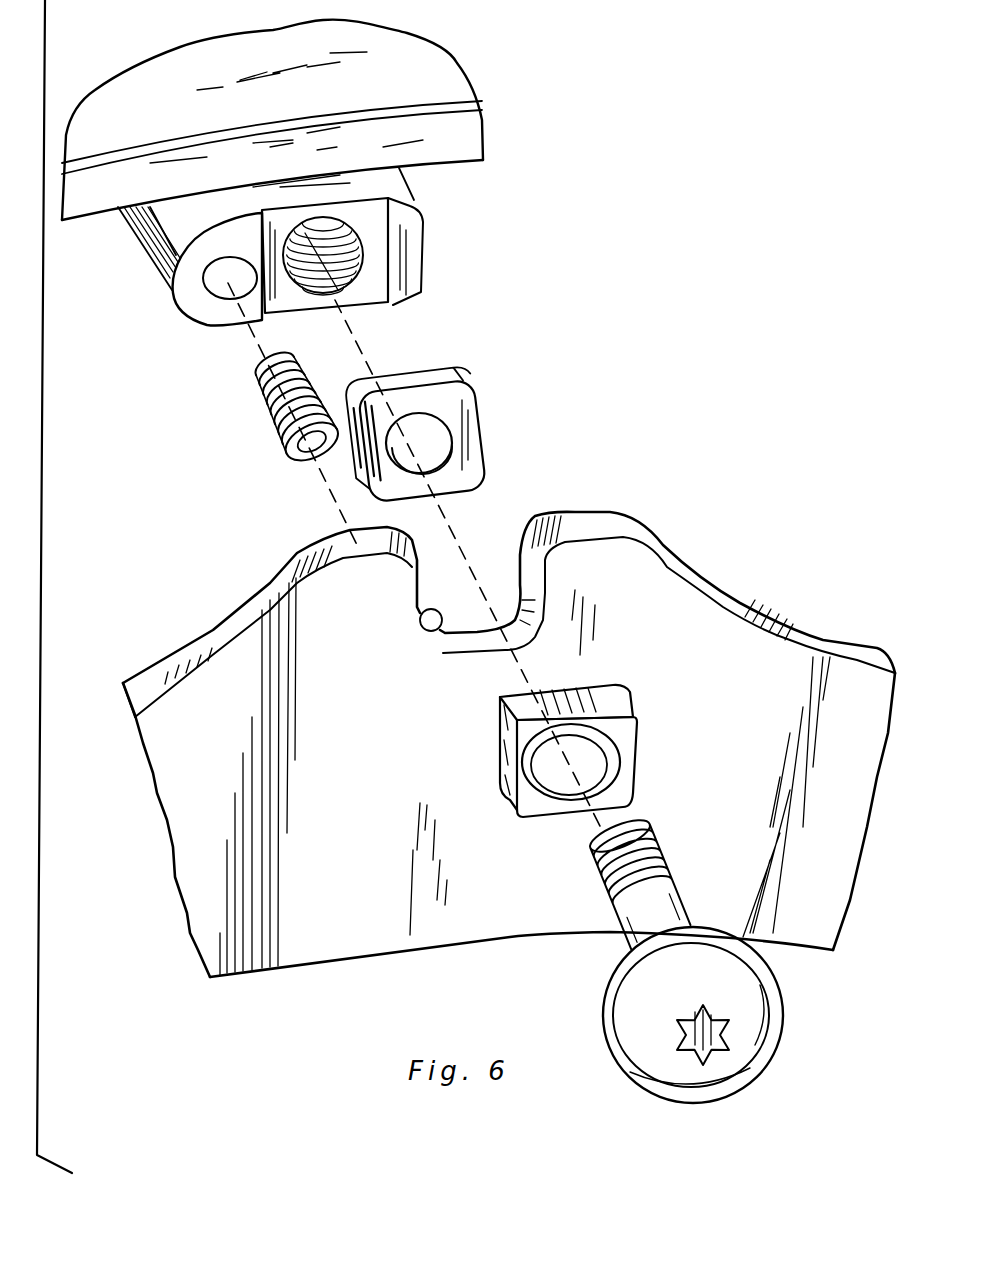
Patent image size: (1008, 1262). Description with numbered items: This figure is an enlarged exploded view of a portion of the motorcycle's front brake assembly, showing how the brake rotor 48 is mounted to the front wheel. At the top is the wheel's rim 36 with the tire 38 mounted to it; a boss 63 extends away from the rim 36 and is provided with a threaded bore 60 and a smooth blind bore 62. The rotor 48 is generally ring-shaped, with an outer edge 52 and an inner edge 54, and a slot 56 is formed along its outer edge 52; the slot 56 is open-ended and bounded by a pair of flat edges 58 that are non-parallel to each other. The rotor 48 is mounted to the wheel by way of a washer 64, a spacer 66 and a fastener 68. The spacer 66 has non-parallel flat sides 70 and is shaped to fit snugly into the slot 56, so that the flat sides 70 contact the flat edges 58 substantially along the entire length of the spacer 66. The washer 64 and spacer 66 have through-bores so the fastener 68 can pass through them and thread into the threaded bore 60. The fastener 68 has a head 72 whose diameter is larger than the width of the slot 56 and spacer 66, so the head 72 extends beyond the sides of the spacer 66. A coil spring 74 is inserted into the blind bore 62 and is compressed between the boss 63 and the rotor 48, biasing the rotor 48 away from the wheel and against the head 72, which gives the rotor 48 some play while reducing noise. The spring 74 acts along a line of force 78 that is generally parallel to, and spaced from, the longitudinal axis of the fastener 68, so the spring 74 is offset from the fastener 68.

The rim 36 is at (440, 129).
The tire 38 is at (447, 67).
The rotor 48 is at (380, 810).
The outer edge 52 is at (773, 588).
The inner edge 54 is at (380, 957).
The slot 56 is at (485, 552).
The flat edges 58 is at (517, 540).
The threaded bore 60 is at (363, 240).
The smooth blind bore 62 is at (228, 281).
The boss 63 is at (404, 191).
The washer 64 is at (470, 393).
The spacer 66 is at (623, 727).
The fastener 68 is at (643, 920).
The flat sides 70 is at (505, 738).
The head 72 is at (740, 988).
The coil spring 74 is at (262, 412).
The line of force 78 is at (322, 456).